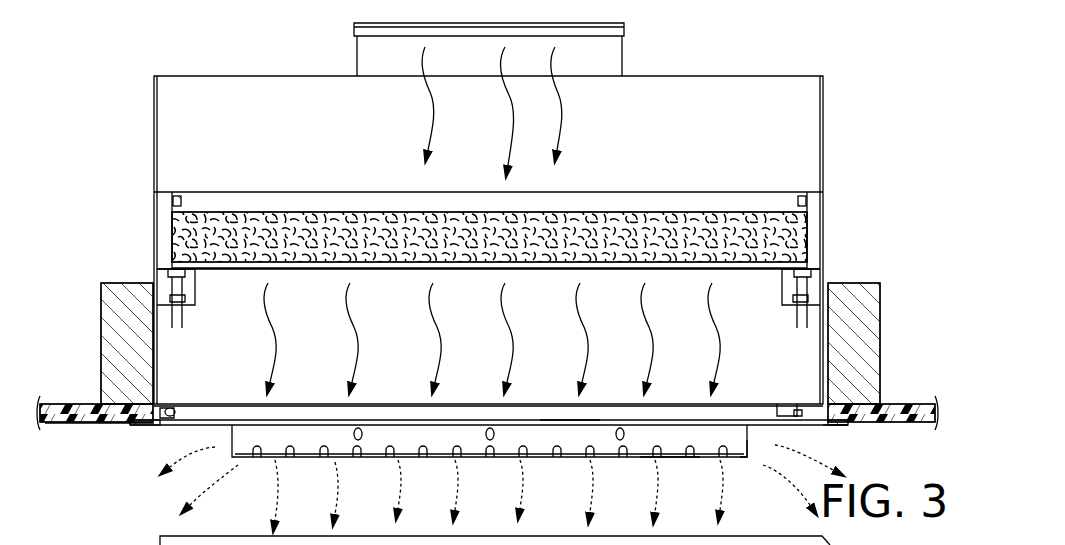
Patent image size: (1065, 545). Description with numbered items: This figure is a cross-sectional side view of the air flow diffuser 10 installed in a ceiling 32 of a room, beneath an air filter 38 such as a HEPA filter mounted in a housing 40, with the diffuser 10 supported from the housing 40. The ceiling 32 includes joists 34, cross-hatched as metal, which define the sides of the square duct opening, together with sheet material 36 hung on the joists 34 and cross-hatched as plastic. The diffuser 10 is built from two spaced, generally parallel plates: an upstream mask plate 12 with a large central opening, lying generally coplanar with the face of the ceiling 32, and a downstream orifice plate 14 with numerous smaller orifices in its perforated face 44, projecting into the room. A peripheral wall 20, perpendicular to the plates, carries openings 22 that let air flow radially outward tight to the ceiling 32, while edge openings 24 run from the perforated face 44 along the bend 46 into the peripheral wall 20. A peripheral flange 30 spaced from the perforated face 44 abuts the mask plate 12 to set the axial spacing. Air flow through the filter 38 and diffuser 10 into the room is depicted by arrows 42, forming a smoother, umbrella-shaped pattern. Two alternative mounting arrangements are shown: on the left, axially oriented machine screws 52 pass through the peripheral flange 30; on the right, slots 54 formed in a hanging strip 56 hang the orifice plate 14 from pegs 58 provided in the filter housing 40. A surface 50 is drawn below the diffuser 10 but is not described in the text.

The air flow diffuser 10 is at (158, 447).
The mask plate 12 is at (740, 421).
The orifice plate 14 is at (663, 458).
The peripheral wall 20 is at (272, 445).
The openings 22 is at (359, 432).
The edge openings 24 is at (425, 448).
The peripheral flange 30 is at (787, 426).
The ceiling 32 is at (87, 426).
The joists 34 is at (110, 325).
The sheet material 36 is at (51, 407).
The air filter 38 is at (764, 202).
The housing 40 is at (825, 137).
The arrows 42 is at (520, 324).
The perforated face 44 is at (462, 457).
The bend 46 is at (748, 457).
The floor 50 is at (524, 538).
The machine screws 52 is at (170, 424).
The slots 54 is at (782, 412).
The hanging strip 56 is at (562, 413).
The pegs 58 is at (797, 411).